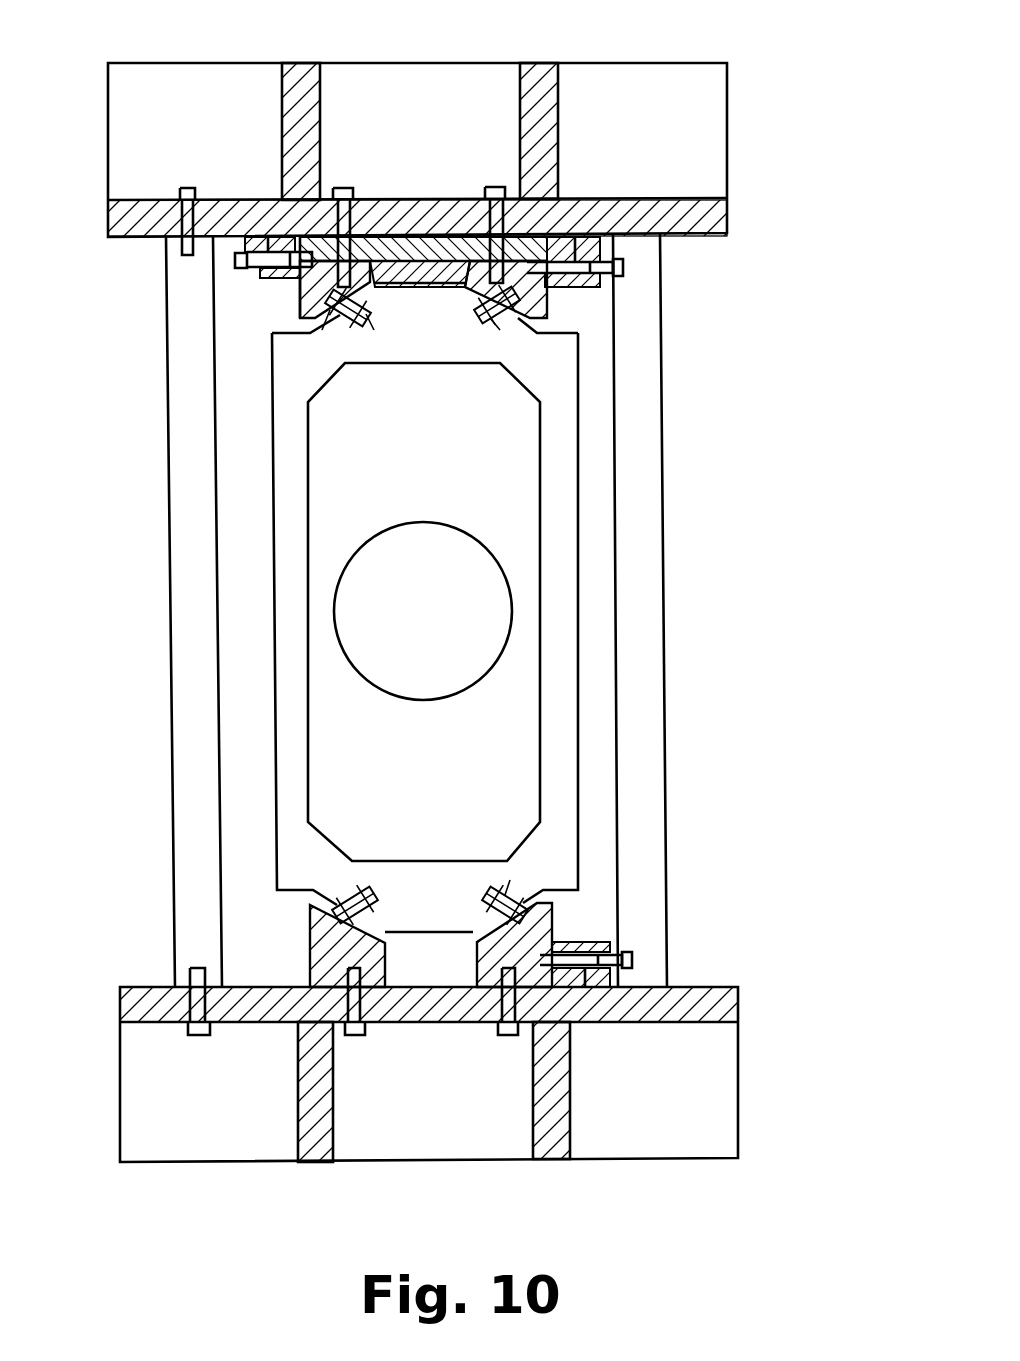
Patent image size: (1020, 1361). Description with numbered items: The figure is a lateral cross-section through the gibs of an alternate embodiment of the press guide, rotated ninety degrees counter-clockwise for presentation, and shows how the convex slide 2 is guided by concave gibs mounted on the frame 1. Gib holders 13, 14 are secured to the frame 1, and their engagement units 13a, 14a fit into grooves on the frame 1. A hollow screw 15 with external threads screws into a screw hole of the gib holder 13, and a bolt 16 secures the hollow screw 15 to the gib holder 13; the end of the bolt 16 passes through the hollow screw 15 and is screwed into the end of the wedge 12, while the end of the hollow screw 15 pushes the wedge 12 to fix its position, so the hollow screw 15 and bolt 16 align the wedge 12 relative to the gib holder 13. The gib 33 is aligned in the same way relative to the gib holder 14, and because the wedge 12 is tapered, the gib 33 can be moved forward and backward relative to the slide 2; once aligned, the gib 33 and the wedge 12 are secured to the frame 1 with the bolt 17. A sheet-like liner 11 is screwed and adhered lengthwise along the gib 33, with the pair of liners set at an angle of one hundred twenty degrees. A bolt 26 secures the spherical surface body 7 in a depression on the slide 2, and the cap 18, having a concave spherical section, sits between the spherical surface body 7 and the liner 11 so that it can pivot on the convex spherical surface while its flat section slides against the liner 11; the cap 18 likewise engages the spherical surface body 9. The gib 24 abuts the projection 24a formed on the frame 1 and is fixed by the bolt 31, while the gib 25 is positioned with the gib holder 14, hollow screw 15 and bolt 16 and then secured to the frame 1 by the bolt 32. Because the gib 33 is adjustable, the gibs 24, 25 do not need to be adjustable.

The frame 1 is at (541, 62).
The slide 2 is at (560, 512).
The spherical surface body 7 is at (492, 330).
The spherical surface body 9 is at (500, 913).
The liner 11 is at (467, 292).
The wedge 12 is at (375, 255).
The gib holder 13 is at (288, 240).
The engagement unit 13a is at (265, 245).
The gib holder 14 is at (562, 232).
The engagement unit 14a is at (590, 237).
The hollow screw 15 is at (248, 268).
The bolt 16 is at (247, 262).
The bolt 17 is at (343, 188).
The cap 18 is at (515, 325).
The gib 24 is at (328, 950).
The projection 24a is at (277, 1022).
The gib 25 is at (477, 955).
The bolt 26 is at (493, 337).
The bolt 31 is at (353, 1037).
The bolt 32 is at (503, 1037).
The gib 33 is at (428, 270).